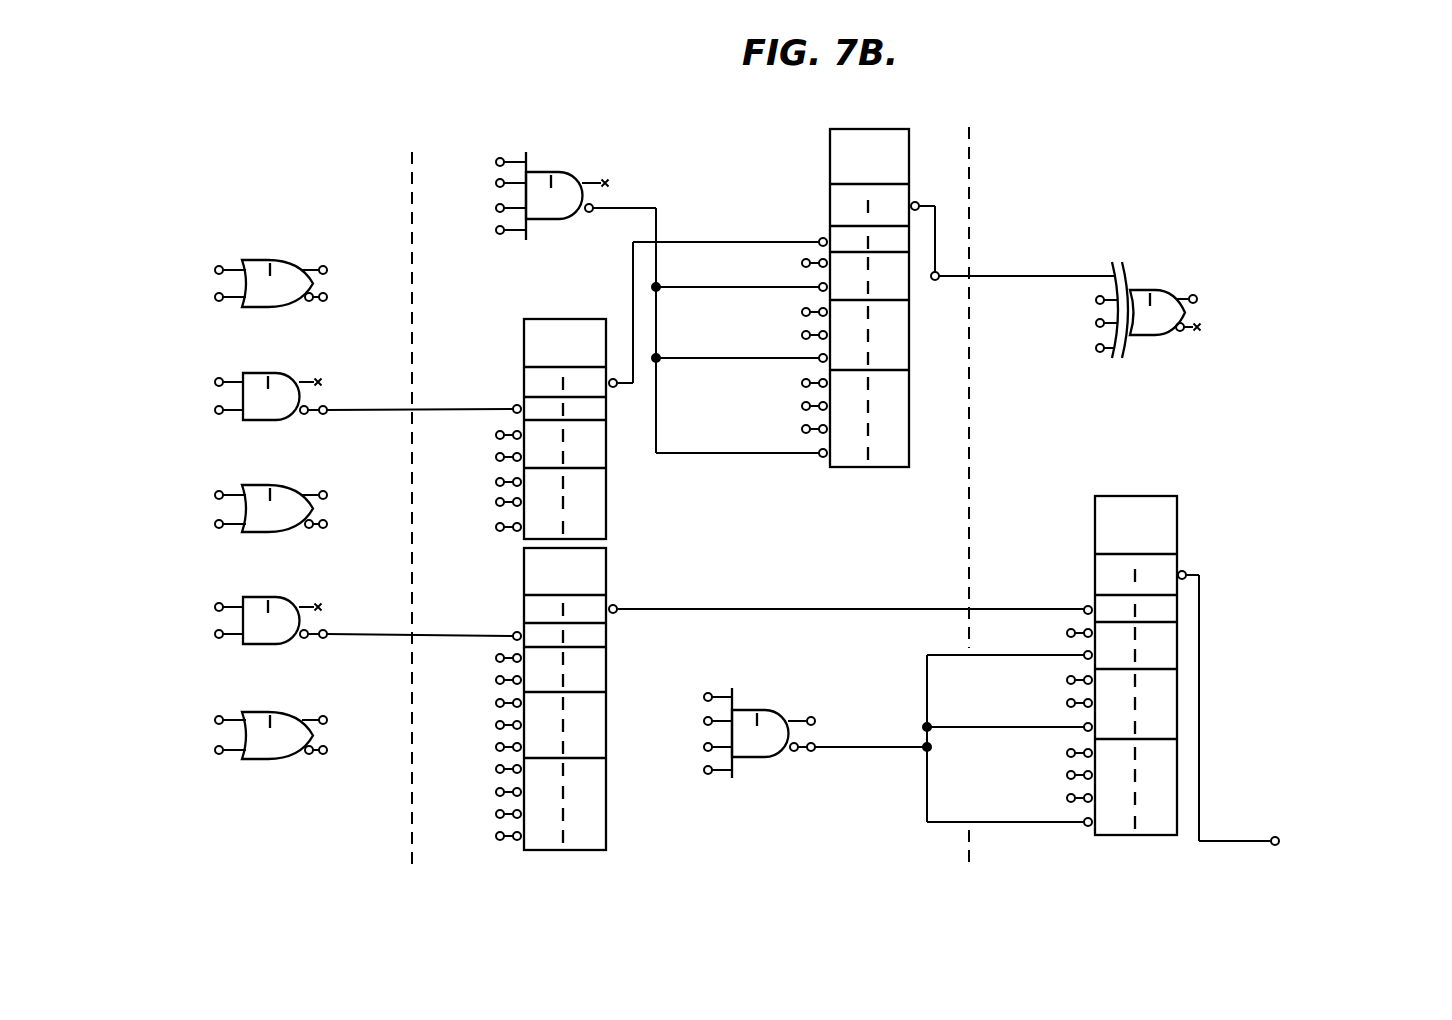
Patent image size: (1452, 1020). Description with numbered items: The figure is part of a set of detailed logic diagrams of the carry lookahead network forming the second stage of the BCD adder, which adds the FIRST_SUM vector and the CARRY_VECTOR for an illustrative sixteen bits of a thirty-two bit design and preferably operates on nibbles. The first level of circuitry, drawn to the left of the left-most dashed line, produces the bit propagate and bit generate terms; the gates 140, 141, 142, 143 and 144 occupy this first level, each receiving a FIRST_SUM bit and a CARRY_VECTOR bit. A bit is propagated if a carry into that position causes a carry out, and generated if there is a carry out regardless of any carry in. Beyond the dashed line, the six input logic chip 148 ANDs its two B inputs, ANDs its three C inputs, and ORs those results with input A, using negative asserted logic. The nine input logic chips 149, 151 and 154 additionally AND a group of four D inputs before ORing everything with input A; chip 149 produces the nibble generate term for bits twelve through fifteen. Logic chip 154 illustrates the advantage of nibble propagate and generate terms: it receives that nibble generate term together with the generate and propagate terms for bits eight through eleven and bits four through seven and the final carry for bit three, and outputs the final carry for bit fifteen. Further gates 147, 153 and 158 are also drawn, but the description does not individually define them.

The OR gate L407 140 is at (227, 267).
The AND gate L408 141 is at (293, 380).
The OR gate L409 142 is at (222, 494).
The AND gate L410 143 is at (291, 604).
The OR gate L411 144 is at (226, 723).
The AND gate L418 147 is at (554, 190).
The six input logic chip 148 is at (540, 428).
The nine input logic chip 149 is at (765, 697).
The nine input logic chip 151 is at (787, 276).
The AND gate L424 153 is at (791, 726).
The nine input logic chip 154 is at (1176, 675).
The XOR gate L431 158 is at (1122, 302).